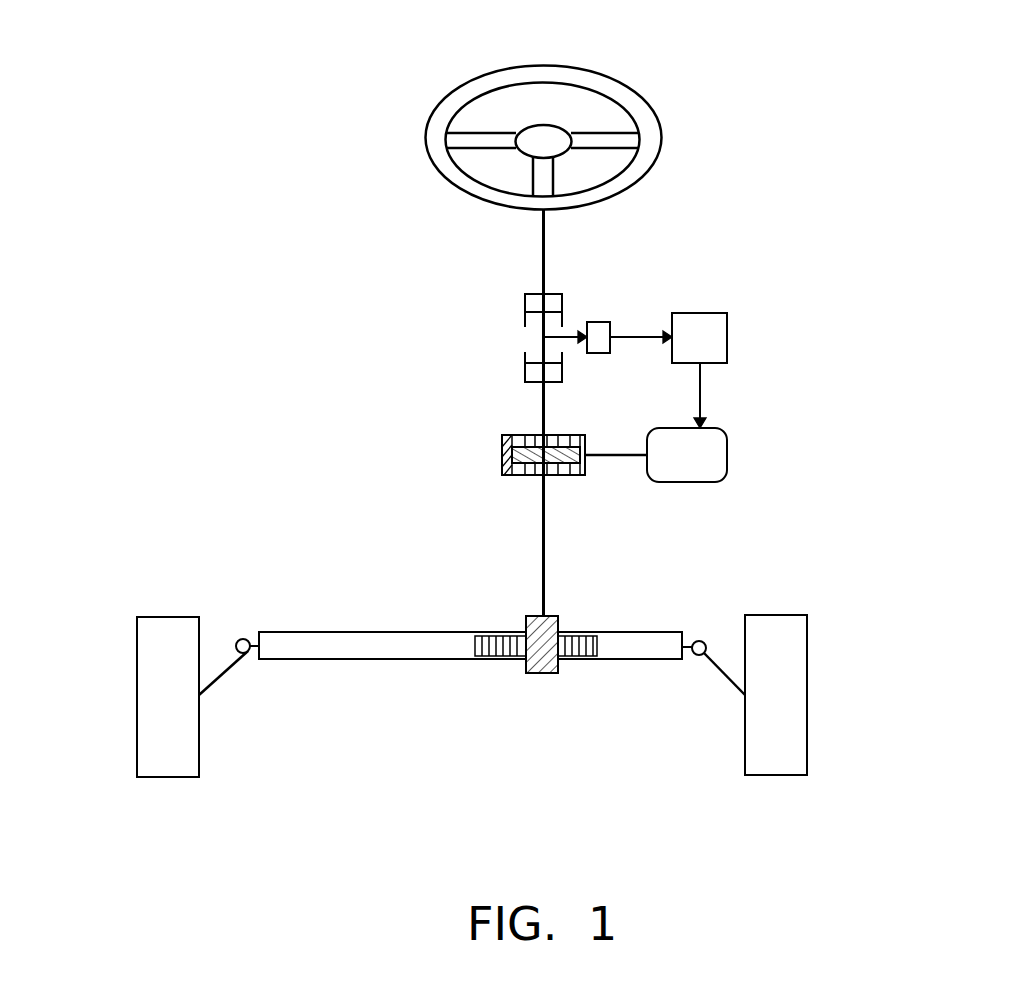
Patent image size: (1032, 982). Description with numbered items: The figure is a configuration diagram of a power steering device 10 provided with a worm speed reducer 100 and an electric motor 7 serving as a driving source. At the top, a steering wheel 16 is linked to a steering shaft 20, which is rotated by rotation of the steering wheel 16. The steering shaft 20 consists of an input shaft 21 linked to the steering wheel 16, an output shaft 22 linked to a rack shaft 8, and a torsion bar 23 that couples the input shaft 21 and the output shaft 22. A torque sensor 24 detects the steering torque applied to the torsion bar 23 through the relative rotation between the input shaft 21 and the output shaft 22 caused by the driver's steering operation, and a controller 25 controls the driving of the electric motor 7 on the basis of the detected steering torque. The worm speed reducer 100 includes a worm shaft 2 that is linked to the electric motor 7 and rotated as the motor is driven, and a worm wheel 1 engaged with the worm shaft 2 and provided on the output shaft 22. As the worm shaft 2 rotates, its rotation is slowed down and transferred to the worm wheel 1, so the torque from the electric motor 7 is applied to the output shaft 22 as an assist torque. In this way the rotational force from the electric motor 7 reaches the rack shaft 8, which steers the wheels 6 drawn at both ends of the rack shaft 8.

The steering wheel 16 is at (633, 105).
The power steering device 10 is at (675, 258).
The steering shaft 20 is at (540, 270).
The input shaft 21 is at (540, 282).
The output shaft 22 is at (540, 405).
The torsion bar 23 is at (540, 330).
The torque sensor 24 is at (593, 335).
The controller 25 is at (715, 328).
The electric motor 7 is at (695, 470).
The worm speed reducer 100 is at (487, 486).
The worm wheel 1 is at (475, 453).
The worm shaft 2 is at (583, 465).
The rack shaft 8 is at (653, 632).
The wheels 6 is at (137, 737).